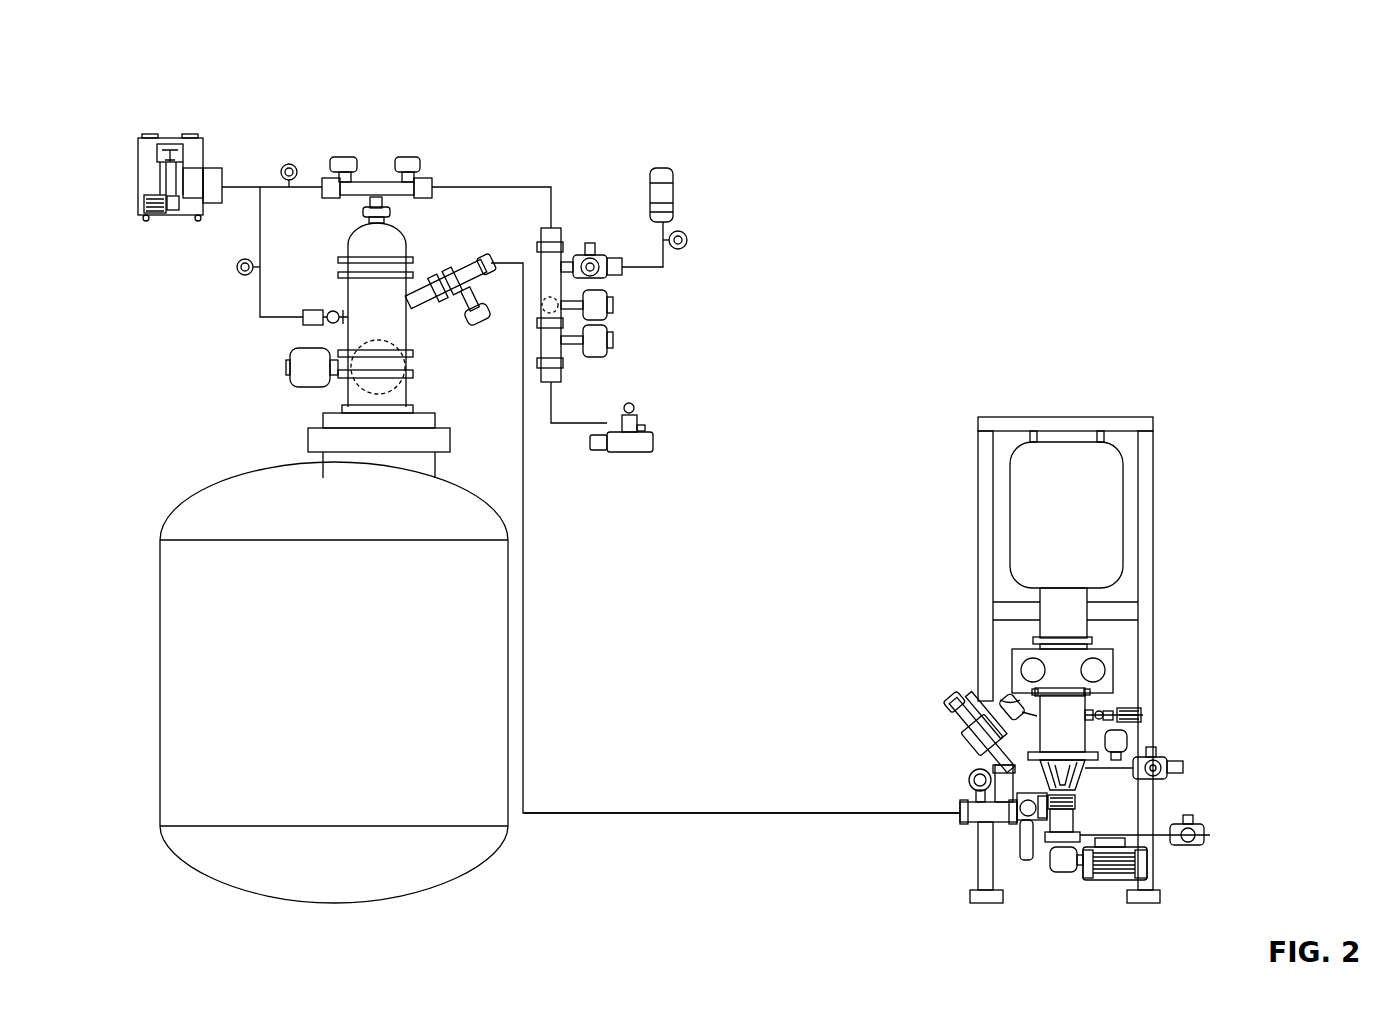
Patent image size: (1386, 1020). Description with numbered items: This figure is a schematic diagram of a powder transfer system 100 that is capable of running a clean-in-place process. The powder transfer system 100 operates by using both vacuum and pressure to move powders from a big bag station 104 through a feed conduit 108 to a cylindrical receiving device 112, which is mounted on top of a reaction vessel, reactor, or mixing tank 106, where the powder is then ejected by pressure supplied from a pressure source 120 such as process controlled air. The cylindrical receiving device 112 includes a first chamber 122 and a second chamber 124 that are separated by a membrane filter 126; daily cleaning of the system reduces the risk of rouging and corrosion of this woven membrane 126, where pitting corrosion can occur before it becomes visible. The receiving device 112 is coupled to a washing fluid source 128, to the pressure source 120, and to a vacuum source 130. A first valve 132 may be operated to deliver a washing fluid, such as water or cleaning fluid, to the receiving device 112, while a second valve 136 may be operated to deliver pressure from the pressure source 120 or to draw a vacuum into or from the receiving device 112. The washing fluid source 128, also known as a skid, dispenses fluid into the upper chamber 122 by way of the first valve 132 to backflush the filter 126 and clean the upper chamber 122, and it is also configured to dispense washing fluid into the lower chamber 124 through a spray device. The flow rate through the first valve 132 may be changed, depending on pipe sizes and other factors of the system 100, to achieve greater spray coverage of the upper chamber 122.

The powder transfer system 100 is at (106, 80).
The big bag station 104 is at (1062, 393).
The tank 106 is at (144, 714).
The feed conduit 108 is at (688, 812).
The cylindrical receiving device 112 is at (428, 234).
The pressure source 120 is at (673, 183).
The first chamber 122 is at (360, 245).
The second chamber 124 is at (357, 287).
The membrane filter 126 is at (347, 267).
The washing fluid source 128 is at (138, 187).
The vacuum source 130 is at (637, 452).
The first valve 132 is at (342, 148).
The second valve 136 is at (411, 148).